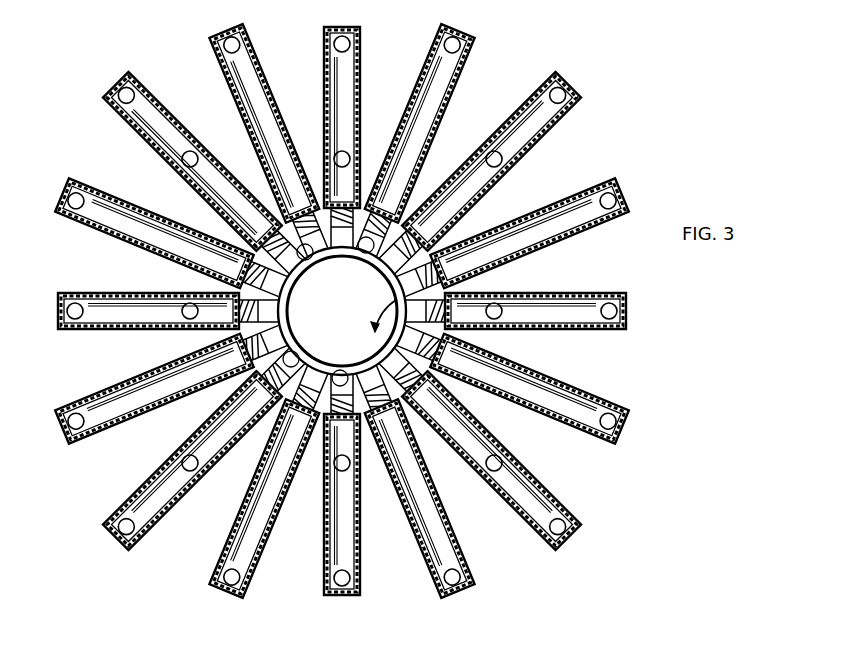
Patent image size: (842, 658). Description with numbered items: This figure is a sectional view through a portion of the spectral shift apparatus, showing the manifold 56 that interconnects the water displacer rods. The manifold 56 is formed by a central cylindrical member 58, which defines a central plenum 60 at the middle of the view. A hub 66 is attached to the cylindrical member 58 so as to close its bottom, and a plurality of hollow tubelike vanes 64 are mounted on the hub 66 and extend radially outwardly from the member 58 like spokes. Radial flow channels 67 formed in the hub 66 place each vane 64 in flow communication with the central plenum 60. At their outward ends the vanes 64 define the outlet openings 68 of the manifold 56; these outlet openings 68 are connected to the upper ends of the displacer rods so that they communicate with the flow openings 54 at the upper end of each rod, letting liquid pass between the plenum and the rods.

The flow opening 54 is at (360, 47).
The manifold 56 is at (633, 330).
The central cylindrical member 58 is at (382, 268).
The central plenum 60 is at (442, 296).
The hollow tubelike vane 64 is at (227, 70).
The hub 66 is at (352, 325).
The radial flow channel 67 is at (292, 252).
The outlet opening 68 is at (246, 34).